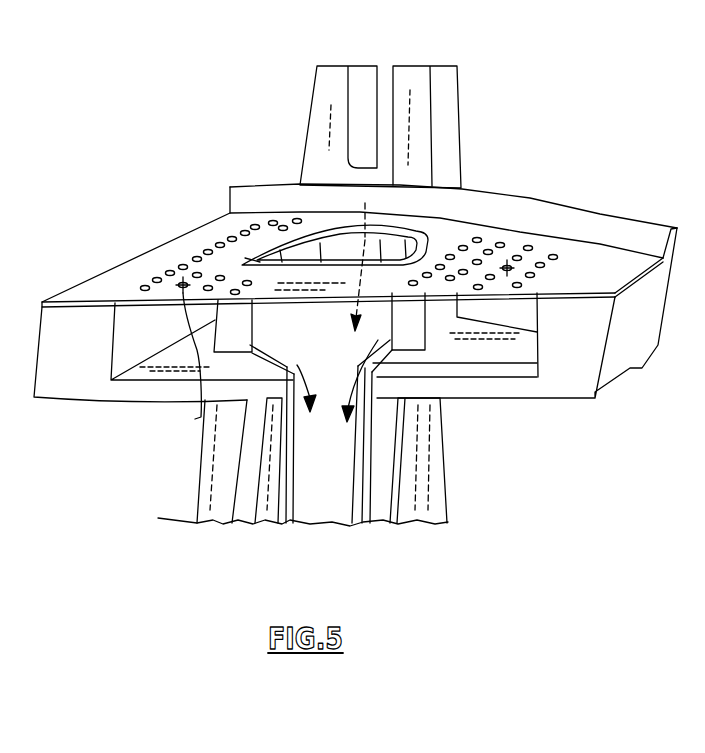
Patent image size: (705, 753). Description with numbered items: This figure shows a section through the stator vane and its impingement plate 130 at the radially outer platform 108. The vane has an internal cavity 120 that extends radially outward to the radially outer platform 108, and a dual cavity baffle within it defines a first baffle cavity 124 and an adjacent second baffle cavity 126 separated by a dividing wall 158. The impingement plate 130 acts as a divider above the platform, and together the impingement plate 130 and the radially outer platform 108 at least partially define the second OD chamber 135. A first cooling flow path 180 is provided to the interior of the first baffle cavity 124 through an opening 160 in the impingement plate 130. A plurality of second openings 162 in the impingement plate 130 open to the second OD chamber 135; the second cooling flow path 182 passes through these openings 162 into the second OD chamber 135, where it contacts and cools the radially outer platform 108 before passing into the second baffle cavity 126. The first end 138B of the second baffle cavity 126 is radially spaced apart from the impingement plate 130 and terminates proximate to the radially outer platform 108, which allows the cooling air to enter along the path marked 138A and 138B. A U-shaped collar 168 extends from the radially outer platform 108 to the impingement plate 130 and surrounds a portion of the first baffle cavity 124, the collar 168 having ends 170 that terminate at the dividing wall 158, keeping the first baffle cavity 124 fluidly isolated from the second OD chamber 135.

The radially outer platform 108 is at (145, 392).
The internal cavity 120 is at (270, 512).
The first baffle cavity 124 is at (357, 256).
The second baffle cavity 126 is at (348, 474).
The impingement plate 130 is at (157, 262).
The second OD chamber 135 is at (525, 367).
The first flow path 138A is at (260, 240).
The first end of the second baffle cavity 138B is at (274, 332).
The dividing wall 158 is at (317, 505).
The opening 160 is at (428, 245).
The second openings 162 is at (557, 257).
The U-shaped collar 168 is at (440, 317).
The ends of the collar 170 is at (405, 331).
The first cooling flow path 180 is at (405, 188).
The second cooling flow path 182 is at (214, 326).